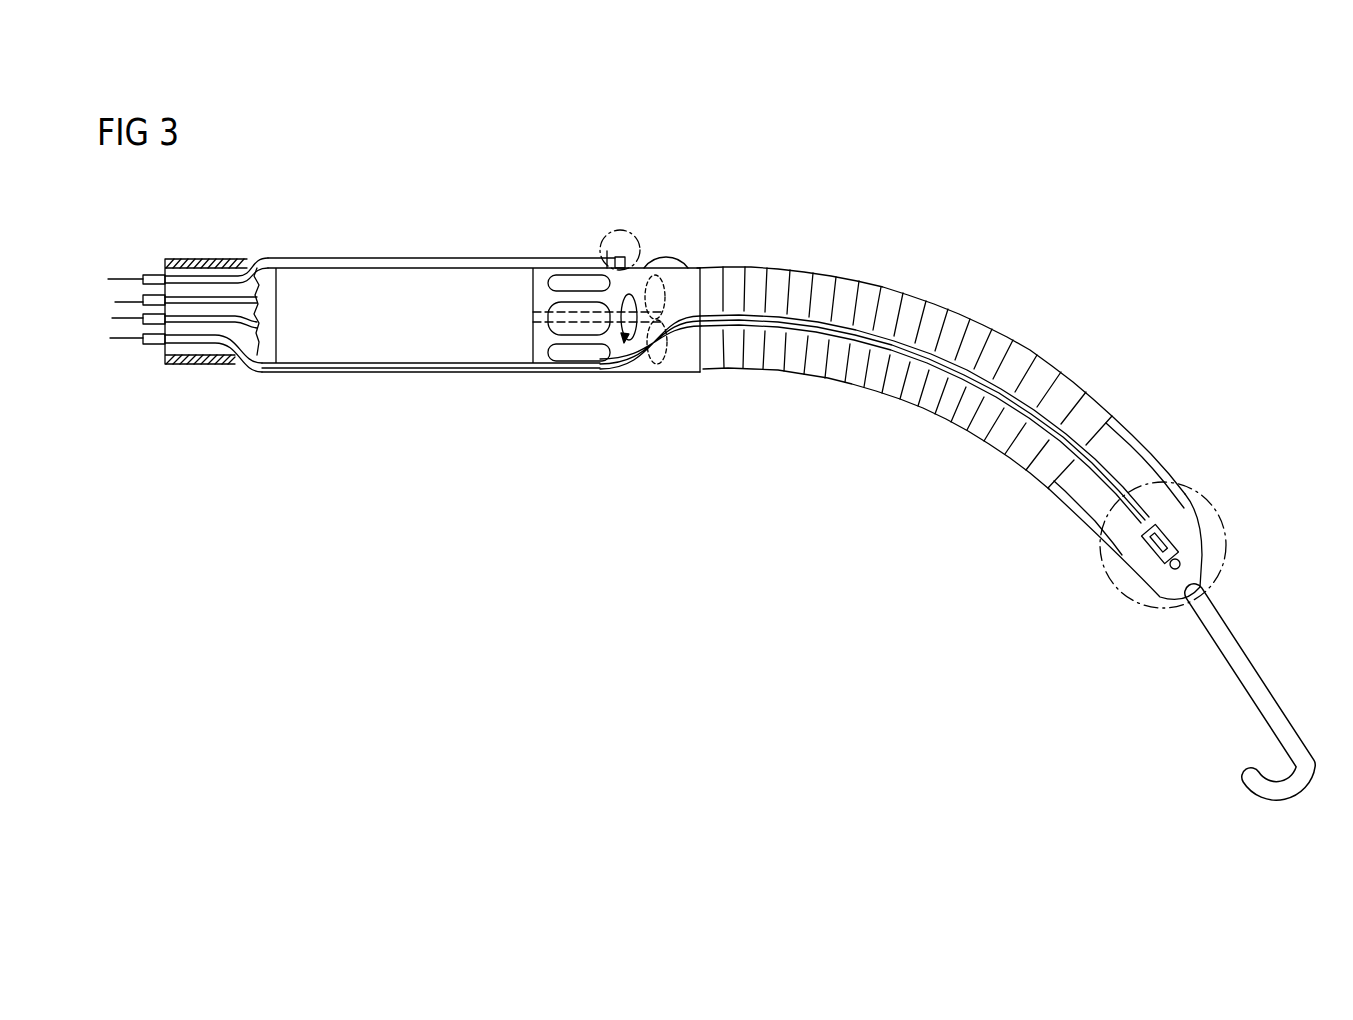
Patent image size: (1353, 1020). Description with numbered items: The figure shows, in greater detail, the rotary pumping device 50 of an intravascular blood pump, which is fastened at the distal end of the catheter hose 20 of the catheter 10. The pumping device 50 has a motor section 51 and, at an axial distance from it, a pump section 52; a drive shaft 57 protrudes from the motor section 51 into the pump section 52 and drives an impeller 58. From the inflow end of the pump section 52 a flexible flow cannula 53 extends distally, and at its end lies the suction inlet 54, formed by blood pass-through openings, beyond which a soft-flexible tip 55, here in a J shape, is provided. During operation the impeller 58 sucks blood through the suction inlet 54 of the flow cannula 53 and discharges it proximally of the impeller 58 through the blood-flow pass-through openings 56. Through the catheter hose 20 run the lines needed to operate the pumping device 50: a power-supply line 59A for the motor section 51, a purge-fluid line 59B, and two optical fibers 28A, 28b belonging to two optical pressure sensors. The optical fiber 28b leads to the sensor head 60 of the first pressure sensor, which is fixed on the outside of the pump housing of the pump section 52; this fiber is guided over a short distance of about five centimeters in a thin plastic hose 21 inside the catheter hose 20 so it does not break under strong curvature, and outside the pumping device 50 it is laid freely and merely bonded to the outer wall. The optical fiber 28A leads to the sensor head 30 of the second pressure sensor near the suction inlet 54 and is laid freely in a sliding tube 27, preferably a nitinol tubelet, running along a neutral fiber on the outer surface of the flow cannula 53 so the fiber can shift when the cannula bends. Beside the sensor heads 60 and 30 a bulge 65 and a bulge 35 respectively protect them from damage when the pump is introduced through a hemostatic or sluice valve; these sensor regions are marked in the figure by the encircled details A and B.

The catheter 10 is at (258, 208).
The rotary pumping device 50 is at (856, 190).
The catheter hose 20 is at (205, 260).
The thin plastic hose 21 is at (150, 276).
The optical fiber 28b is at (123, 278).
The optical fiber 28A is at (130, 344).
The power-supply line 59A is at (258, 299).
The purge-fluid line 59B is at (258, 328).
The motor section 51 is at (467, 334).
The pump section 52 is at (626, 394).
The blood-flow pass-through openings 56 is at (580, 352).
The drive shaft 57 is at (572, 315).
The impeller 58 is at (655, 340).
The sensor head 60 is at (611, 246).
The detail A is at (622, 240).
The bulge 65 is at (665, 258).
The flow cannula 53 is at (912, 300).
The sliding tube 27 is at (958, 385).
The suction inlet 54 is at (1126, 452).
The sensor head 30 is at (1137, 549).
The bulge 35 is at (1170, 569).
The detail B is at (1108, 590).
The soft-flexible tip 55 is at (1248, 672).